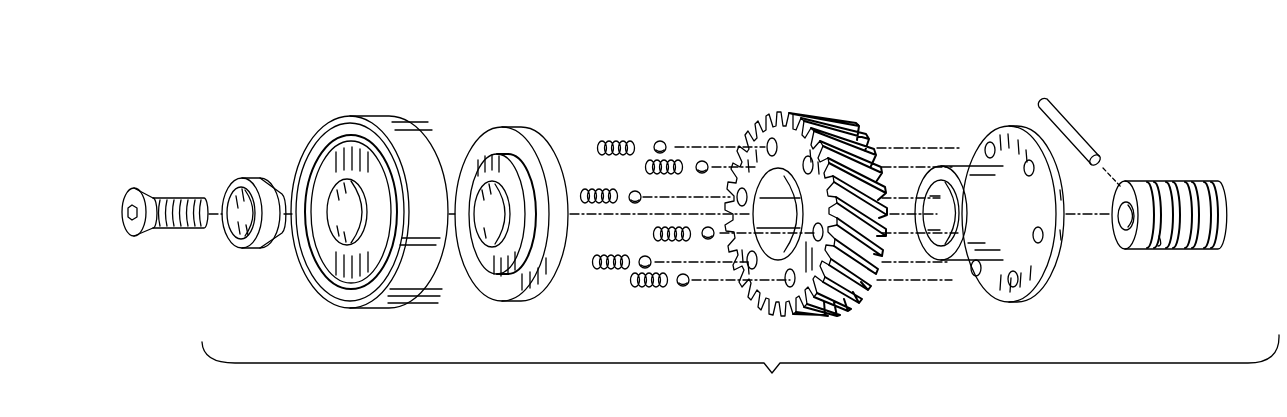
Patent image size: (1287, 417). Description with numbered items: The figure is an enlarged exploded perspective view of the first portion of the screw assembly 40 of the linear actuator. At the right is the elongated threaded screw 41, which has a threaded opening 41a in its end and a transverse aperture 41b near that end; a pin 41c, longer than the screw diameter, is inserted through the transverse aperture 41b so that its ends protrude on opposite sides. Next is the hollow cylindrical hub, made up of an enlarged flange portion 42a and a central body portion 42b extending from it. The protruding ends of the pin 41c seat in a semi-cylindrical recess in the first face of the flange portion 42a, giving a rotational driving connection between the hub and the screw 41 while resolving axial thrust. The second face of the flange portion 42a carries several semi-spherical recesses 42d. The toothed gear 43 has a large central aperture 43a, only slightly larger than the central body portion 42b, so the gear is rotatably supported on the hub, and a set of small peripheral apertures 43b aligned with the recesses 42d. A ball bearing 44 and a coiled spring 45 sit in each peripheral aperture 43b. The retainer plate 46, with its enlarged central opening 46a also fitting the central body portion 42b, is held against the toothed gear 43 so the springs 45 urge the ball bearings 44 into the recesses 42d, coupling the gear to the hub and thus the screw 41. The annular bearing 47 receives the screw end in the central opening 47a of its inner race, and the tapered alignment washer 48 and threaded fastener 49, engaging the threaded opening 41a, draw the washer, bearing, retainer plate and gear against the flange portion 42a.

The screw assembly 40 is at (1193, 108).
The threaded screw 41 is at (1205, 186).
The threaded opening 41a is at (1119, 230).
The transverse aperture 41b is at (1215, 280).
The pin 41c is at (1064, 122).
The flange portion 42a is at (1040, 286).
The central body portion 42b is at (976, 186).
The recesses 42d is at (1028, 161).
The toothed gear 43 is at (855, 136).
The central aperture 43a is at (778, 176).
The peripheral apertures 43b is at (771, 140).
The ball bearing 44 is at (703, 161).
The coiled spring 45 is at (584, 192).
The retainer plate 46 is at (500, 140).
The central opening 46a is at (483, 246).
The annular bearing 47 is at (377, 126).
The central opening 47a is at (335, 248).
The tapered alignment washer 48 is at (250, 178).
The threaded fastener 49 is at (178, 204).